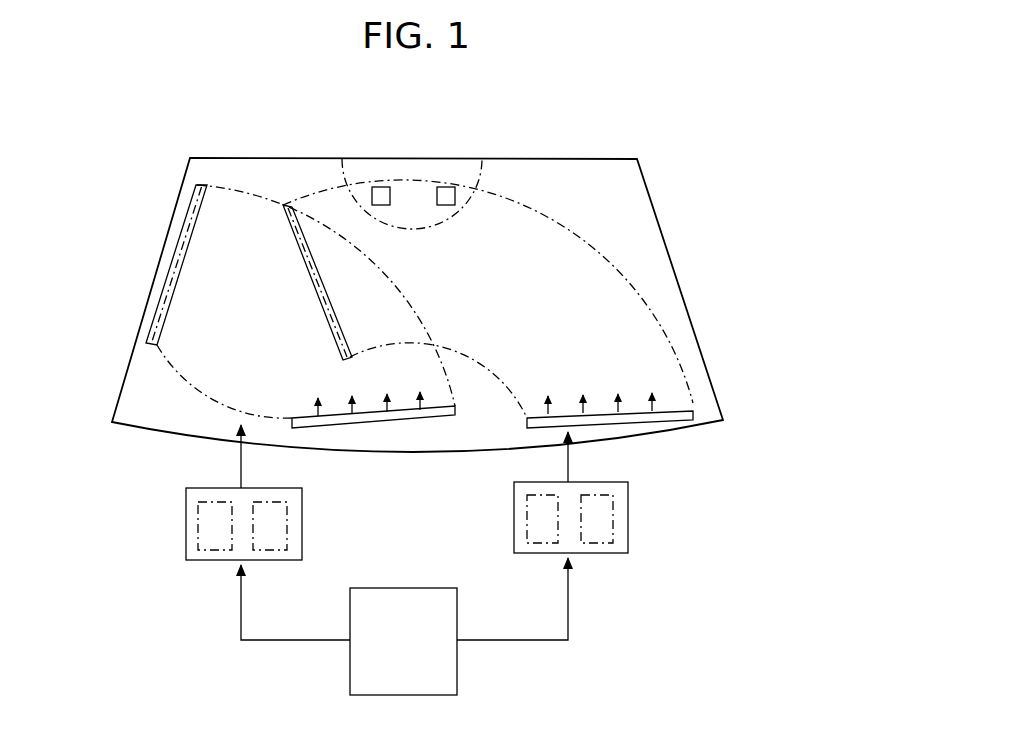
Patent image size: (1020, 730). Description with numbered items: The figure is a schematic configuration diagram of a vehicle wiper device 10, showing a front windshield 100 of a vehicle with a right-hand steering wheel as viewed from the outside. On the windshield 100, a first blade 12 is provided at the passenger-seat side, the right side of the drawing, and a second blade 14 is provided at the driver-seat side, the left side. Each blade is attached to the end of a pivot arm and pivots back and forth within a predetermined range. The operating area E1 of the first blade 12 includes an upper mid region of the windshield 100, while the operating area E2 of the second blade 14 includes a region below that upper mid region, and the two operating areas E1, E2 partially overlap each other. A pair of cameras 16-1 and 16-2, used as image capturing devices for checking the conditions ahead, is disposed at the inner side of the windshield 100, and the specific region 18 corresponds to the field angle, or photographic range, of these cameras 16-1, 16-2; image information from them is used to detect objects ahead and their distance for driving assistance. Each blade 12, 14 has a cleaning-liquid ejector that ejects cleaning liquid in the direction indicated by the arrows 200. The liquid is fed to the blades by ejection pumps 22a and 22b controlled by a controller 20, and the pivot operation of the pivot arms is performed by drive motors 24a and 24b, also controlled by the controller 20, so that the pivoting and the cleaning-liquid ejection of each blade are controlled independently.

The vehicle wiper device 10 is at (724, 454).
The front windshield 100 is at (627, 208).
The first blade 12 is at (323, 288).
The second blade 14 is at (167, 280).
The camera 16-1 is at (383, 186).
The camera 16-2 is at (448, 186).
The specific region 18 is at (448, 222).
The arrows 200 is at (312, 412).
The controller 20 is at (458, 670).
The ejection pump 22a is at (527, 520).
The ejection pump 22b is at (199, 520).
The drive motor 24a is at (614, 521).
The drive motor 24b is at (287, 525).
The operating area E1 is at (622, 296).
The operating area E2 is at (205, 240).